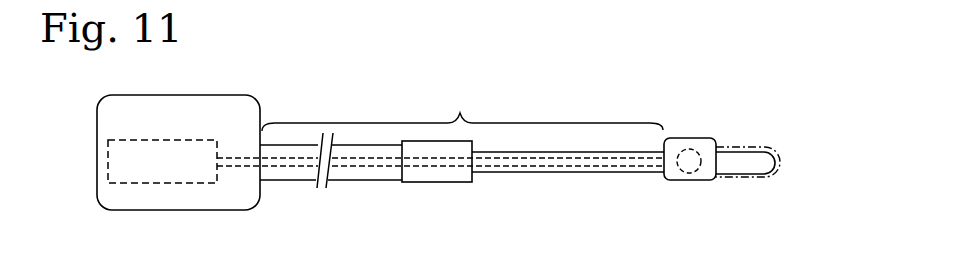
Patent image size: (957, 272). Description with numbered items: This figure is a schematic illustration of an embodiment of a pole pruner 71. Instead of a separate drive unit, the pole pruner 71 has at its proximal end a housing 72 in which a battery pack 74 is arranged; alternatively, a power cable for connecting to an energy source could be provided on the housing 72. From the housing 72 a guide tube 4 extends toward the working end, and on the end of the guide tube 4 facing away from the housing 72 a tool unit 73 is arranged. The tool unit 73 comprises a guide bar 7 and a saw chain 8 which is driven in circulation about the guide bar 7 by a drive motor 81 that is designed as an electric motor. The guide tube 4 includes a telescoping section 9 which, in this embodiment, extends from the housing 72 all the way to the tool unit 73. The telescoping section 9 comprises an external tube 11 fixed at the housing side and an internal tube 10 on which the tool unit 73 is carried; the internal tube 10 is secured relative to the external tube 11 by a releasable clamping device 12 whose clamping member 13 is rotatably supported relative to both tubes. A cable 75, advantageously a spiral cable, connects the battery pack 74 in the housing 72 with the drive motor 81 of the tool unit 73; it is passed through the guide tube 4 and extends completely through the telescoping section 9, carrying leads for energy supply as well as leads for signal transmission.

The pole pruner 71 is at (633, 56).
The housing 72 is at (228, 95).
The tool unit 73 is at (708, 135).
The battery pack 74 is at (160, 184).
The cable 75 is at (293, 168).
The telescoping section 9 is at (462, 114).
The external tube 11 is at (378, 181).
The clamping device 12 is at (417, 185).
The clamping member 13 is at (443, 183).
The internal tube 10 is at (510, 174).
The guide tube 4 is at (586, 186).
The drive motor 81 is at (688, 174).
The guide bar 7 is at (742, 164).
The saw chain 8 is at (740, 146).